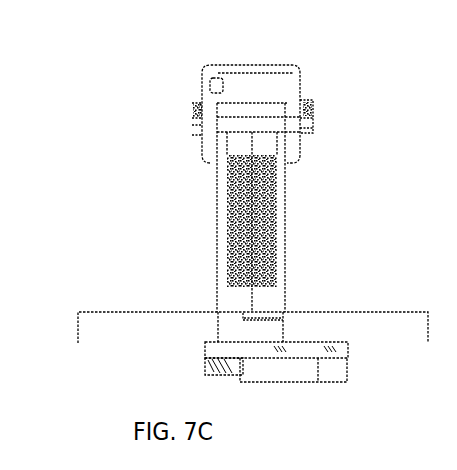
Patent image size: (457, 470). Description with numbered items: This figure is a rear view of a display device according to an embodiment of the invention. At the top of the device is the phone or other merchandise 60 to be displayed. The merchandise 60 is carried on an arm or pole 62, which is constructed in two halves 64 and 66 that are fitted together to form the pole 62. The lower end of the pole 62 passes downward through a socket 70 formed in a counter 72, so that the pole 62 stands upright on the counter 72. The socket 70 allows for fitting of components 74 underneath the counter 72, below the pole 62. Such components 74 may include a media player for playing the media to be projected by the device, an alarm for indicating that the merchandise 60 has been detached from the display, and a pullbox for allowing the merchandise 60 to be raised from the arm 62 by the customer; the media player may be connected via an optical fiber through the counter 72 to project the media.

The phone or other merchandise 60 is at (214, 73).
The arm or pole 62 is at (186, 243).
The first half of pole 64 is at (223, 217).
The second half of pole 66 is at (278, 200).
The socket 70 is at (240, 322).
The counter 72 is at (375, 330).
The components 74 is at (290, 367).